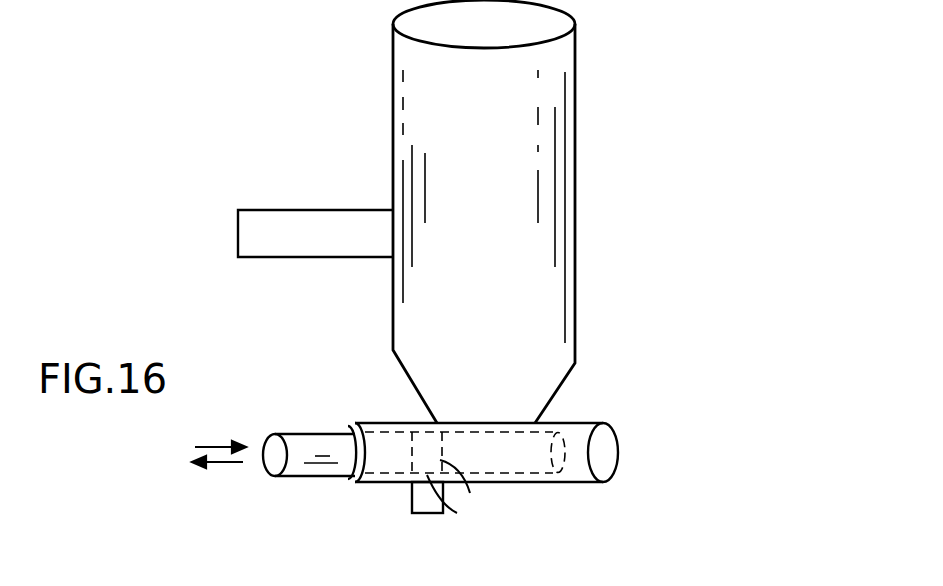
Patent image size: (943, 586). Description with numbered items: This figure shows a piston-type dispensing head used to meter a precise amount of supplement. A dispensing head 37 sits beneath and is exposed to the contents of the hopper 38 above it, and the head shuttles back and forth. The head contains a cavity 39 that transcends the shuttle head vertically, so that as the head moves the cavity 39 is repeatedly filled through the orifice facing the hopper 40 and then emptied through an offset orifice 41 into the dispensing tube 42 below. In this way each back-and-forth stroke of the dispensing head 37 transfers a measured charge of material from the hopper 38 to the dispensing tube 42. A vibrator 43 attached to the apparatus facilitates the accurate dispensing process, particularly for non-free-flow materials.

The dispensing head 37 is at (307, 445).
The hopper 38 is at (572, 220).
The cavity 39 is at (477, 489).
The orifice facing the hopper 40 is at (495, 425).
The offset orifice 41 is at (452, 508).
The dispensing tube 42 is at (412, 503).
The vibrator 43 is at (312, 222).